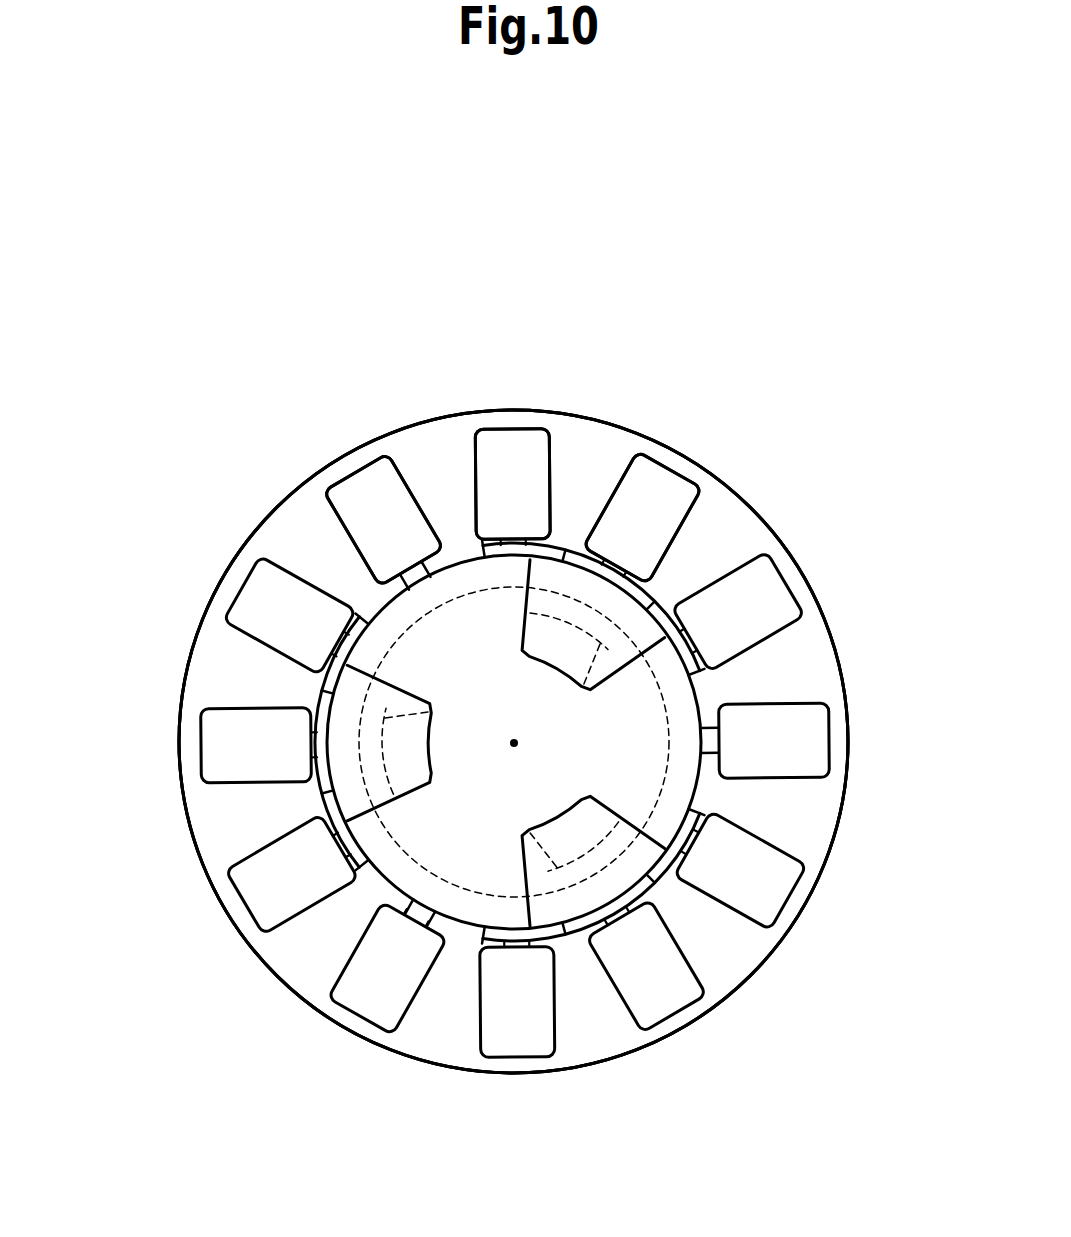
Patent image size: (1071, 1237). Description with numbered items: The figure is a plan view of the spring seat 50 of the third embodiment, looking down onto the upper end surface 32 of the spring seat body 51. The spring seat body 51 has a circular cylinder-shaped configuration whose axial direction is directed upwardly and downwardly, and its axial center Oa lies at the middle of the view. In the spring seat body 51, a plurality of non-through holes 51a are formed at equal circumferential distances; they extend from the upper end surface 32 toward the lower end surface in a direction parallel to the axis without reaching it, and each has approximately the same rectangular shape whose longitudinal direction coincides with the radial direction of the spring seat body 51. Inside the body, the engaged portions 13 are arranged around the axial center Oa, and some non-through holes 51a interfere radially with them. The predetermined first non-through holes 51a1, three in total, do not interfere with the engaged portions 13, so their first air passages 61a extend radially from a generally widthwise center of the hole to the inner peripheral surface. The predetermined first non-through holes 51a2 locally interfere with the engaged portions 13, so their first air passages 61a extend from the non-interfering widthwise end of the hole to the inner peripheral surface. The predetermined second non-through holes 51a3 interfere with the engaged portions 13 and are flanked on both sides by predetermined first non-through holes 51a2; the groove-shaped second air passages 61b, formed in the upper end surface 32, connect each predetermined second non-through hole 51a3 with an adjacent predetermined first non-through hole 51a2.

The spring seat 50 is at (806, 400).
The spring seat body 51 is at (808, 657).
The non-through holes 51a is at (670, 267).
The predetermined first non-through holes 51a1 is at (385, 470).
The predetermined first non-through holes 51a2 is at (480, 447).
The predetermined second non-through holes 51a3 is at (645, 468).
The first air passages 61a is at (476, 550).
The second air passages 61b is at (565, 545).
The upper end surface 32 is at (797, 812).
The engaged portions 13 is at (560, 656).
The axial center Oa is at (519, 766).